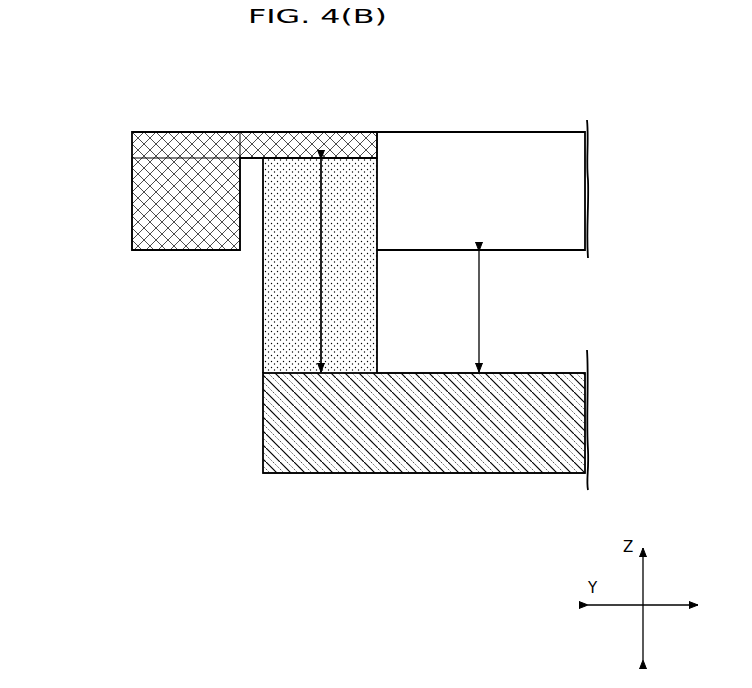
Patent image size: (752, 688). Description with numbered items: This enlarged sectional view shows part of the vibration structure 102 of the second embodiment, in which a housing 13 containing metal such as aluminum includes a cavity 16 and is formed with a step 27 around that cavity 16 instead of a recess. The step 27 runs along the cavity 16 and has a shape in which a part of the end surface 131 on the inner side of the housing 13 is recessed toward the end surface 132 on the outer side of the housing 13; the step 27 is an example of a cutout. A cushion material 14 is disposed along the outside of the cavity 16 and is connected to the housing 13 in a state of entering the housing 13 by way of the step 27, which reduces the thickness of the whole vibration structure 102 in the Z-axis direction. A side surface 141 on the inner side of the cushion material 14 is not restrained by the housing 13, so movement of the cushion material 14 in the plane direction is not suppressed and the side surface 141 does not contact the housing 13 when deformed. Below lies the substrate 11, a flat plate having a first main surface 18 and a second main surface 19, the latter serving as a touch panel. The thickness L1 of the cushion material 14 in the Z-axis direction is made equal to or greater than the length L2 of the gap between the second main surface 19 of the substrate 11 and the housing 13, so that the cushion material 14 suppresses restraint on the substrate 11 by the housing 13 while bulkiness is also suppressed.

The vibration structure 102 is at (144, 80).
The substrate 11 is at (376, 474).
The housing 13 is at (175, 132).
The end surface 131 is at (378, 148).
The end surface 132 is at (132, 206).
The cushion material 14 is at (263, 268).
The side surface 141 is at (378, 333).
The cavity 16 is at (520, 168).
The first main surface 18 is at (473, 474).
The second main surface 19 is at (553, 372).
The step 27 is at (252, 174).
The thickness L1 is at (320, 312).
The length L2 is at (482, 309).